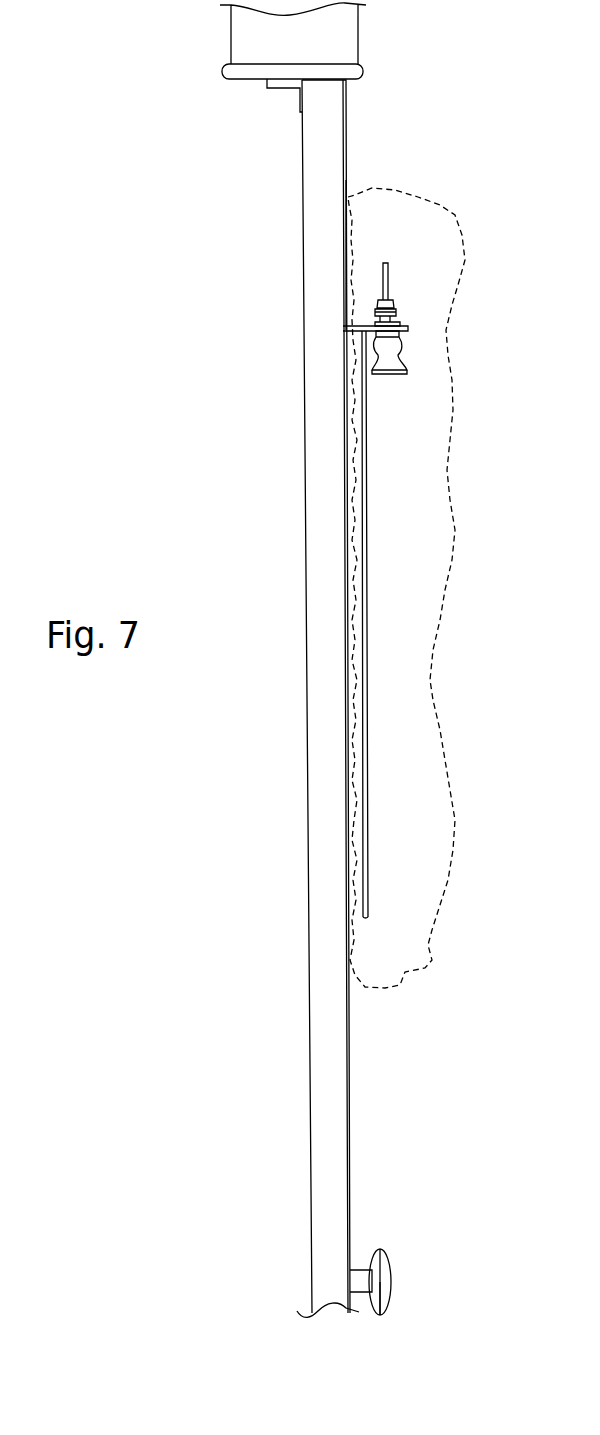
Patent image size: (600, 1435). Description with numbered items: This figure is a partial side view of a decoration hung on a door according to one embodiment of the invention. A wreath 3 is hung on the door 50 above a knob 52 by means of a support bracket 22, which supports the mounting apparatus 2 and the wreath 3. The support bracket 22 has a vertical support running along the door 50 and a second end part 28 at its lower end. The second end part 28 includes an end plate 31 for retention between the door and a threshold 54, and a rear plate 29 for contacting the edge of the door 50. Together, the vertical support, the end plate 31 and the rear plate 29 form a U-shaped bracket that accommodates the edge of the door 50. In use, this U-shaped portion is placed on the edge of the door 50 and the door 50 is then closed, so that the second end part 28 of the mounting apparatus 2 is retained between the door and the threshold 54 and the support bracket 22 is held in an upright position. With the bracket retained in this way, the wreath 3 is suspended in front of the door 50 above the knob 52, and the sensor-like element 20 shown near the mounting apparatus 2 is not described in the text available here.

The threshold 54 is at (274, 50).
The end plate 31 is at (331, 78).
The rear plate 29 is at (298, 105).
The second end part 28 is at (323, 84).
The support bracket 22 is at (346, 184).
The door 50 is at (334, 758).
The wreath 3 is at (413, 617).
The mounting apparatus 2 is at (418, 316).
The sensor probe 20 is at (388, 280).
The knob 52 is at (392, 1281).